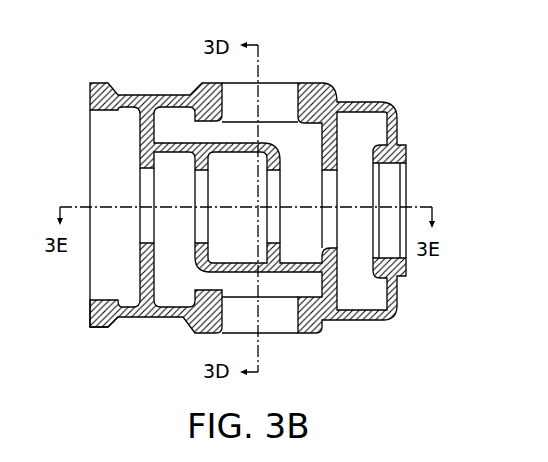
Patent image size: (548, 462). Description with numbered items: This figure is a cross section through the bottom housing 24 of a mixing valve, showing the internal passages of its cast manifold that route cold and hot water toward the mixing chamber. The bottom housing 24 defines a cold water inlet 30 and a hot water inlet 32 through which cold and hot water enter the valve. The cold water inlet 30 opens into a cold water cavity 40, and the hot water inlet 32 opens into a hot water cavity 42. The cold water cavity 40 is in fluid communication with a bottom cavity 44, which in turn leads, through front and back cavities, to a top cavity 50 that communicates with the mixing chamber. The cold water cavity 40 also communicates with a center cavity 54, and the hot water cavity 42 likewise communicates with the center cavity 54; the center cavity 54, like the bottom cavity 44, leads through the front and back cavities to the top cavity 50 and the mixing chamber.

The bottom housing 24 is at (100, 323).
The cold water inlet 30 is at (272, 82).
The hot water inlet 32 is at (273, 337).
The cold water cavity 40 is at (168, 127).
The hot water cavity 42 is at (205, 282).
The bottom cavity 44 is at (358, 132).
The top cavity 50 is at (113, 155).
The center cavity 54 is at (243, 248).